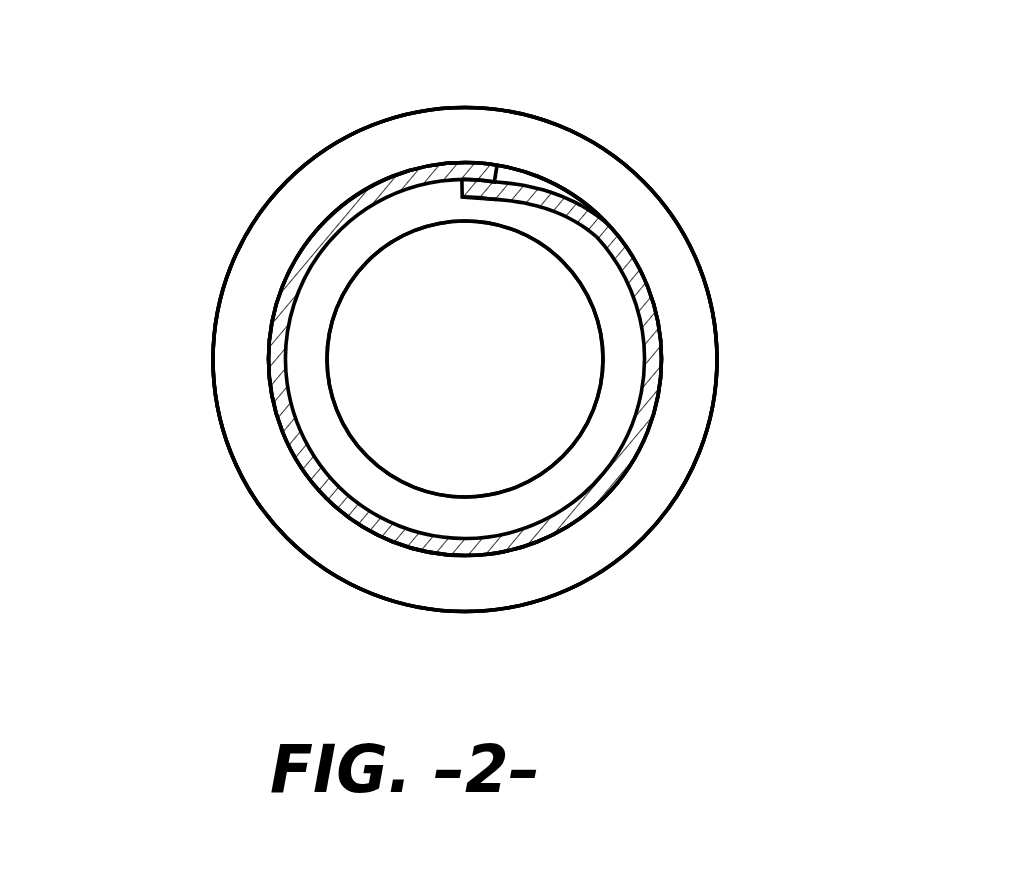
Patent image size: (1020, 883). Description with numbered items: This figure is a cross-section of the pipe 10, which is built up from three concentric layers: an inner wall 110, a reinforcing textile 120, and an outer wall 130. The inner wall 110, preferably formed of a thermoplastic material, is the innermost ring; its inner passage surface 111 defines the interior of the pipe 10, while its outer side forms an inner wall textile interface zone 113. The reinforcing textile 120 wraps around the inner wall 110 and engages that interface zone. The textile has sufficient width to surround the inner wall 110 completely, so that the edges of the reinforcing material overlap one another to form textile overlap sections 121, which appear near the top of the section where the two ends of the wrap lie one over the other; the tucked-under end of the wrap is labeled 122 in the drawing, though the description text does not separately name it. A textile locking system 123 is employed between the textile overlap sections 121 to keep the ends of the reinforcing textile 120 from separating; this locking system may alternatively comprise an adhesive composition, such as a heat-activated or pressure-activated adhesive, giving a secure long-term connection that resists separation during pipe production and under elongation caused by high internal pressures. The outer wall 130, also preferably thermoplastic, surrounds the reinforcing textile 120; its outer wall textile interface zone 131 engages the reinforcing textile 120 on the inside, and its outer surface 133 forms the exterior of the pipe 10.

The pipe 10 is at (233, 157).
The inner wall 110 is at (320, 298).
The inner passage surface 111 is at (612, 355).
The inner wall textile interface zone 113 is at (650, 292).
The reinforcing textile 120 is at (419, 287).
The textile overlap sections 121 is at (500, 165).
The second end of sleeve 122 is at (603, 230).
The textile locking system 123 is at (523, 170).
The outer wall 130 is at (240, 387).
The outer wall textile interface zone 131 is at (660, 372).
The outer surface 133 is at (702, 452).